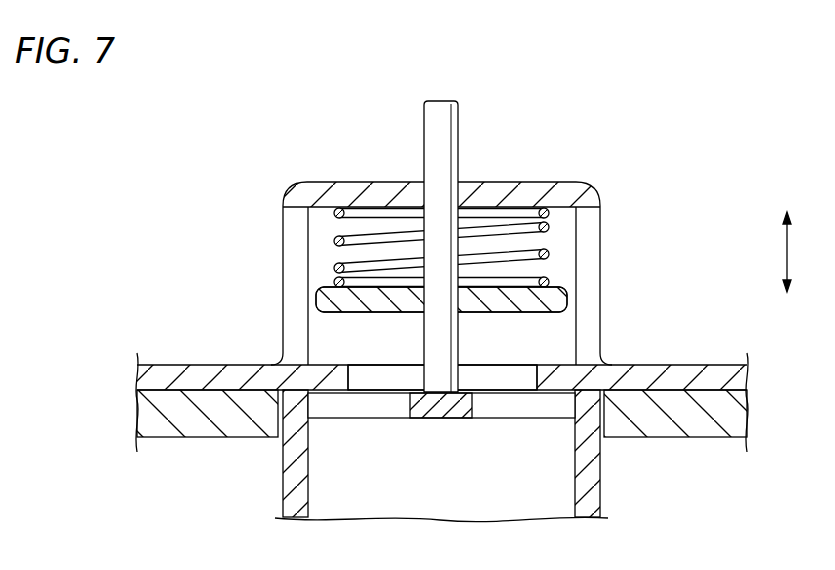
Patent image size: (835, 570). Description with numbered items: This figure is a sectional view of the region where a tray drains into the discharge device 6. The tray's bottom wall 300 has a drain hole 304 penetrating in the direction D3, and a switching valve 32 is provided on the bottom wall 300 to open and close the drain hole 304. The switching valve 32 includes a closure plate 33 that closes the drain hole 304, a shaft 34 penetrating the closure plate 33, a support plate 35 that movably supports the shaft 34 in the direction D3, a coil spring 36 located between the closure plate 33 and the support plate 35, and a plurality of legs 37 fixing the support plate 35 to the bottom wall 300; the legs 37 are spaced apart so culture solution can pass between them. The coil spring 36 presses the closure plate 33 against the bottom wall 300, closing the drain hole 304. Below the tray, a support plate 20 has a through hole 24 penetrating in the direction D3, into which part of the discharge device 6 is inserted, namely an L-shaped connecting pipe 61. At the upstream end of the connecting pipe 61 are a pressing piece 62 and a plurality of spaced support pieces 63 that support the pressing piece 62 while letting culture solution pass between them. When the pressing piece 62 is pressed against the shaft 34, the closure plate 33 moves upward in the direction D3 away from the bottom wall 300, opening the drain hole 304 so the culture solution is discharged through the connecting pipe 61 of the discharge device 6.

The discharge device 6 is at (445, 456).
The support plate 20 is at (703, 422).
The through hole 24 is at (594, 443).
The switching valve 32 is at (477, 246).
The closure plate 33 is at (380, 298).
The shaft 34 is at (438, 145).
The support plate 35 is at (518, 193).
The coil spring 36 is at (550, 253).
The leg 37 is at (588, 291).
The connecting pipe 61 is at (297, 482).
The pressing piece 62 is at (445, 408).
The support piece 63 is at (515, 408).
The bottom wall 300 is at (693, 372).
The drain hole 304 is at (497, 377).
The direction D3 is at (801, 252).